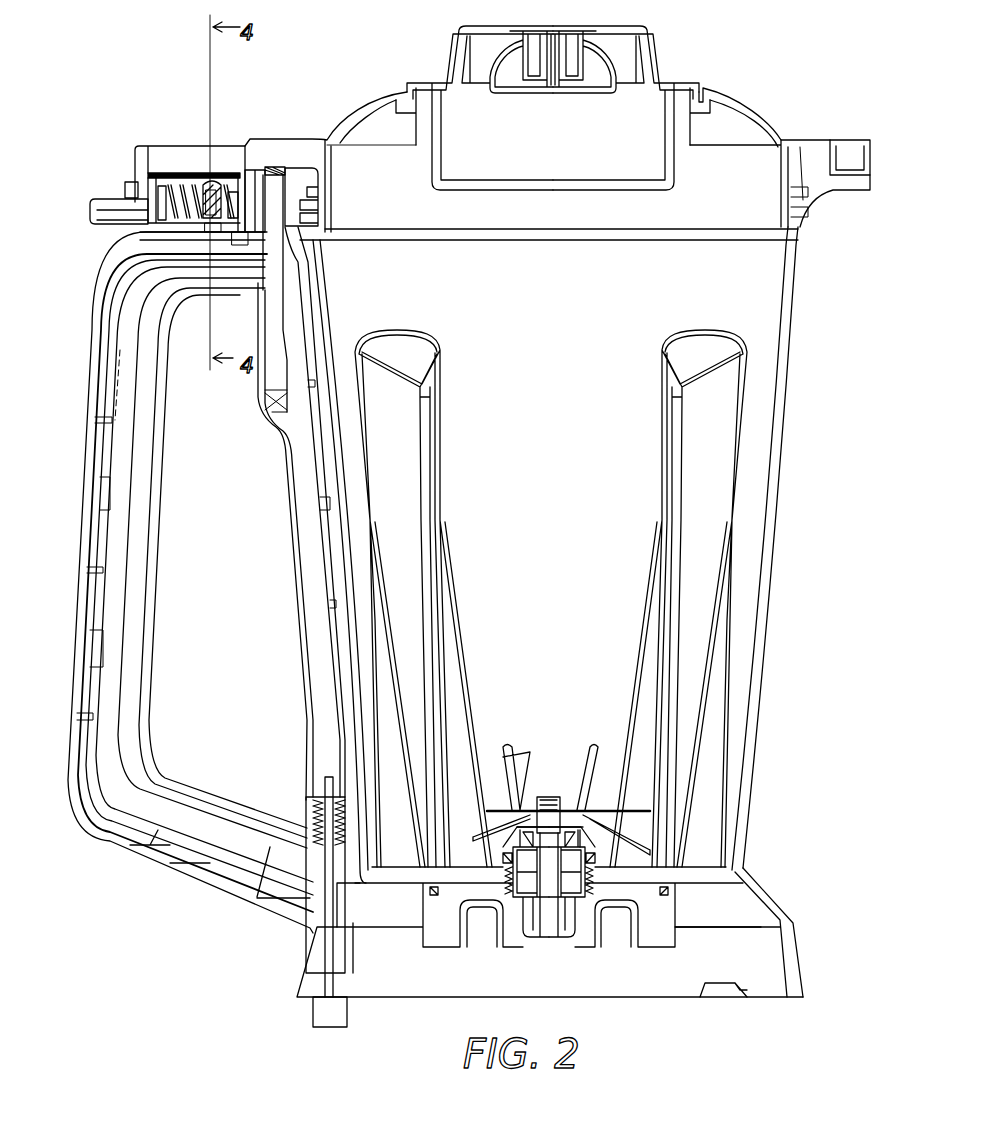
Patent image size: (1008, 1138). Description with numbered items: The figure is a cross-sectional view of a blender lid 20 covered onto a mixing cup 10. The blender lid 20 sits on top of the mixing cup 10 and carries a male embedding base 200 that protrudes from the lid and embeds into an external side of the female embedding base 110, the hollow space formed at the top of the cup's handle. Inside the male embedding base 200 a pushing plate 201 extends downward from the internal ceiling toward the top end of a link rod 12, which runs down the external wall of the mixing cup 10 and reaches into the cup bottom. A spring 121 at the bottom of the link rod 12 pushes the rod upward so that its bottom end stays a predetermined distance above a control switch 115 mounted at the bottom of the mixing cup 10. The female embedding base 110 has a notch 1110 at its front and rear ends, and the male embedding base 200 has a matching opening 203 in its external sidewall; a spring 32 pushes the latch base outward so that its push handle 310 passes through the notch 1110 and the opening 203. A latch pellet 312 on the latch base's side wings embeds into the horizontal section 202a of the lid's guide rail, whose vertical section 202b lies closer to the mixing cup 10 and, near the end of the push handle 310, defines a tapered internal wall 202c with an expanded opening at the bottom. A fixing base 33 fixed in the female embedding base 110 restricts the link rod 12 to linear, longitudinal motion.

The mixing cup 10 is at (780, 415).
The link rod 12 is at (290, 478).
The blender lid 20 is at (742, 110).
The spring 32 is at (162, 186).
The fixing base 33 is at (233, 192).
The female embedding base 110 is at (183, 176).
The control switch 115 is at (323, 1013).
The spring 121 is at (313, 823).
The male embedding base 200 is at (178, 146).
The pushing plate 201 is at (257, 187).
The horizontal section 202a is at (216, 183).
The vertical section 202b is at (213, 240).
The tapered internal wall 202c is at (217, 280).
The opening 203 is at (125, 190).
The push handle 310 is at (97, 213).
The latch pellet 312 is at (206, 185).
The notch 1110 is at (100, 280).